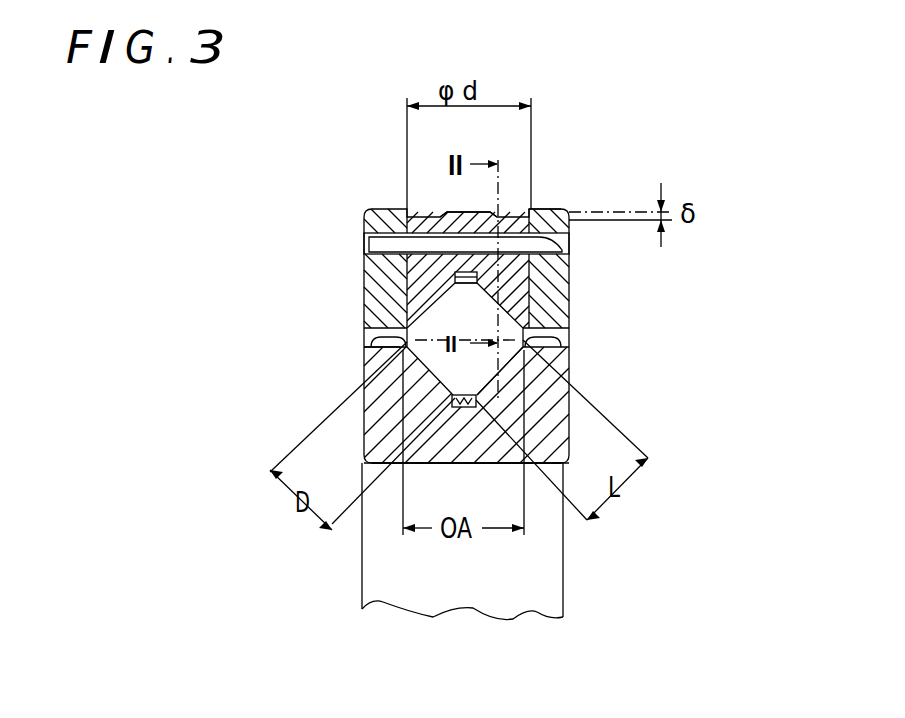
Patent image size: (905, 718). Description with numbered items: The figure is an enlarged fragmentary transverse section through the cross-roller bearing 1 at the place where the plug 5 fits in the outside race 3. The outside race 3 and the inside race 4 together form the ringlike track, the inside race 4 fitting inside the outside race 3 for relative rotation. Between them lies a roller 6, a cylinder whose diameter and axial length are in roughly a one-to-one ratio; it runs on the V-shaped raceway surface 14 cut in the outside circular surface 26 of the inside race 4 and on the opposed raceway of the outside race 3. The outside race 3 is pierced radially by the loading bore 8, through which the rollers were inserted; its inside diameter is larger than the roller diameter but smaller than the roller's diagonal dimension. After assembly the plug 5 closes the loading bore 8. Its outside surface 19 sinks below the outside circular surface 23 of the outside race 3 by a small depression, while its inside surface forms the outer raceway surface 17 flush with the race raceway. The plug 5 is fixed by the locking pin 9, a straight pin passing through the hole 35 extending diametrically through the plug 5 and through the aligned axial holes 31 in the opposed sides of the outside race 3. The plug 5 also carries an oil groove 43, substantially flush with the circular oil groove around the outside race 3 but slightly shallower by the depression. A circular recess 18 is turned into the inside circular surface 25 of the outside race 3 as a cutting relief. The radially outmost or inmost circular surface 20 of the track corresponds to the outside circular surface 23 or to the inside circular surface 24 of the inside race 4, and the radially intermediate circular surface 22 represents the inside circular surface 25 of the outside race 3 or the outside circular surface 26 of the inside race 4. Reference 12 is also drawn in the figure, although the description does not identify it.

The cross-roller bearing 1 is at (604, 188).
The outside race 3 is at (422, 312).
The inside race 4 is at (380, 400).
The plug 5 is at (385, 222).
The roller 6 is at (428, 349).
The loading bore 8 is at (524, 270).
The locking pin 9 is at (385, 245).
The lower stop element 12 is at (462, 409).
The raceway surface 14 is at (532, 355).
The outer raceway surface 17 is at (490, 306).
The circular recess 18 is at (392, 300).
The outside surface 19 is at (432, 214).
The radially outmost or inmost circular surface 20 is at (512, 342).
The radially intermediate circular surface 22 is at (485, 350).
The outside circular surface 23 is at (549, 210).
The inside circular surface 24 is at (473, 467).
The inside circular surface 25 is at (562, 342).
The outside circular surface 26 is at (385, 340).
The axial holes 31 is at (565, 249).
The hole 35 is at (454, 278).
The oil groove 43 is at (465, 211).